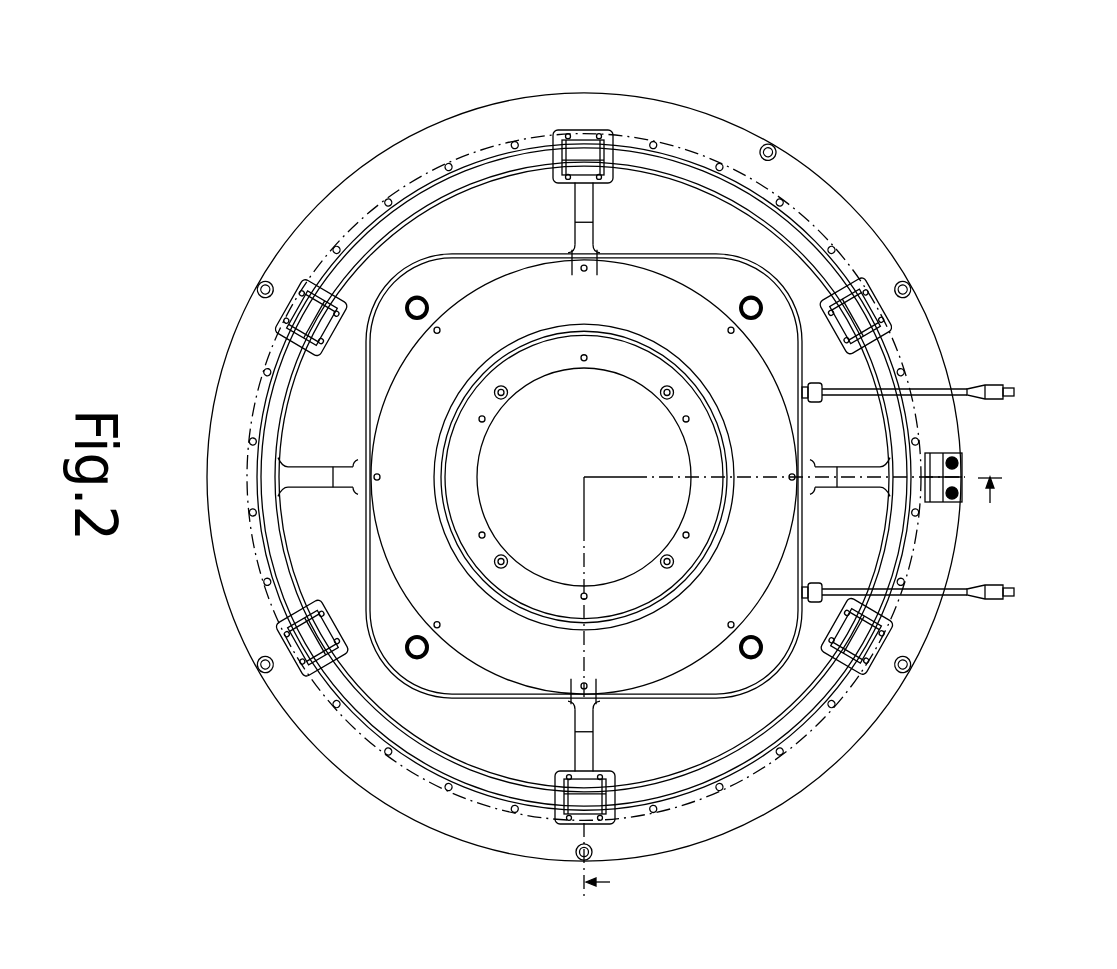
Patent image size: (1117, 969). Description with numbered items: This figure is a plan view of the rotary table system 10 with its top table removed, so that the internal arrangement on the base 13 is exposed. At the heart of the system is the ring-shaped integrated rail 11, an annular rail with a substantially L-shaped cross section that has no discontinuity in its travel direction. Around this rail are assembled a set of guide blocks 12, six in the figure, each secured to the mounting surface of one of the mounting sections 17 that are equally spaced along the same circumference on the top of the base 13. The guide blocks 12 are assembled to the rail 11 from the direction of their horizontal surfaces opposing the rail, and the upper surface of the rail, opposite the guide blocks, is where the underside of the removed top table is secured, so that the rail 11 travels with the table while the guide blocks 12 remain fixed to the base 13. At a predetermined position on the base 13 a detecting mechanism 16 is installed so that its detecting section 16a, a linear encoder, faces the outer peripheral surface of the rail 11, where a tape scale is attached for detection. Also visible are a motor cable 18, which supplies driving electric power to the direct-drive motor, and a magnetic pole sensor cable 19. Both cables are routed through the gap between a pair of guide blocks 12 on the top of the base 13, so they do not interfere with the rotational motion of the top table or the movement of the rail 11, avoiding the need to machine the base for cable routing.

The rotary table system 10 is at (906, 185).
The integrated rail 11 is at (358, 733).
The guide blocks 12 is at (592, 148).
The base 13 is at (880, 707).
The detecting mechanism 16 is at (963, 470).
The detecting section 16a is at (937, 487).
The mounting sections 17 is at (562, 133).
The motor cable 18 is at (983, 385).
The magnetic pole sensor cable 19 is at (985, 598).